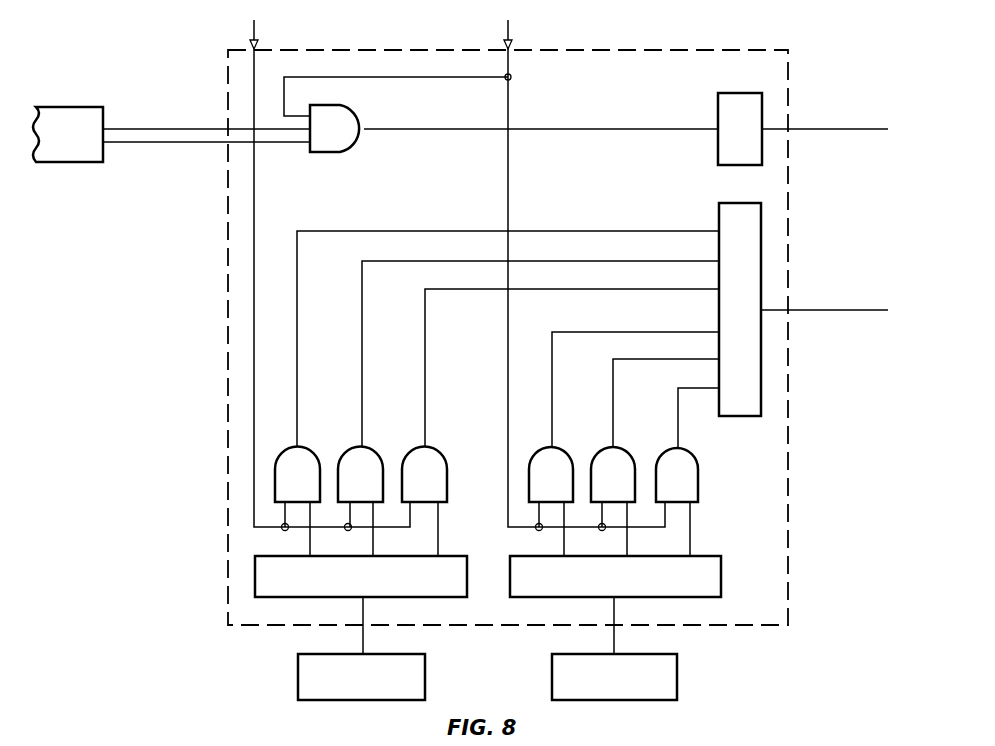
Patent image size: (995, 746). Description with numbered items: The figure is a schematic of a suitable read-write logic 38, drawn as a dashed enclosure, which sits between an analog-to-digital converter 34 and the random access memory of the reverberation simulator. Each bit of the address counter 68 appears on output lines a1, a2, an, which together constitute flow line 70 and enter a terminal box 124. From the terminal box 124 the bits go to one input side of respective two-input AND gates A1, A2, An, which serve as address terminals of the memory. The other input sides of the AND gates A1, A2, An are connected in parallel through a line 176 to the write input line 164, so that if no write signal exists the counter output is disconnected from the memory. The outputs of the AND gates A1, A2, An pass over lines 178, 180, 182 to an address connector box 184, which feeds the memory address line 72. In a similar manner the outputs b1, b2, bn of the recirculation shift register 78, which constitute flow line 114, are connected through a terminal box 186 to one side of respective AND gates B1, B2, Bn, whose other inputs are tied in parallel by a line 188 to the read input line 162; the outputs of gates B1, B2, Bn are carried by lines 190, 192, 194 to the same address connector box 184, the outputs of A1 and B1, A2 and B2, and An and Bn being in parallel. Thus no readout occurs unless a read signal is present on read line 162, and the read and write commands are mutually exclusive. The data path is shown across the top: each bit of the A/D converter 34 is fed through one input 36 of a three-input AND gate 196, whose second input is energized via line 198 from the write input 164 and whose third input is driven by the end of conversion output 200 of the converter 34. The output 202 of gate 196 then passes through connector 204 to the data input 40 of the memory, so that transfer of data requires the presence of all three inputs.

The A/D converter 34 is at (76, 108).
The line 36 is at (188, 126).
The read-write logic 38 is at (737, 47).
The line 40 is at (820, 131).
The address counter 68 is at (679, 682).
The line 70 is at (615, 643).
The line 72 is at (826, 313).
The recirculation shift register 78 is at (426, 682).
The flow line 114 is at (364, 643).
The terminal box 124 is at (723, 575).
The read input line 162 is at (256, 24).
The write input line 164 is at (510, 24).
The line 176 is at (510, 169).
The line 178 is at (553, 377).
The line 180 is at (615, 392).
The line 182 is at (680, 419).
The address connector box 184 is at (717, 217).
The terminal box 186 is at (467, 598).
The line 188 is at (255, 265).
The line 190 is at (298, 336).
The line 192 is at (364, 354).
The line 194 is at (427, 374).
The three-input AND gate 196 is at (360, 117).
The line 198 is at (424, 80).
The end of conversion output 200 is at (273, 145).
The output 202 is at (455, 131).
The connector 204 is at (716, 112).
The AND gate B1 is at (299, 447).
The AND gate B2 is at (363, 447).
The AND gate Bn is at (427, 447).
The two-input AND gate A1 is at (554, 447).
The two-input AND gate A2 is at (616, 447).
The two-input AND gate An is at (697, 493).
The shift register output b1 is at (311, 538).
The shift register output b2 is at (374, 538).
The shift register output bn is at (439, 538).
The address counter output line a1 is at (563, 537).
The address counter output line a2 is at (626, 537).
The address counter output line an is at (689, 537).